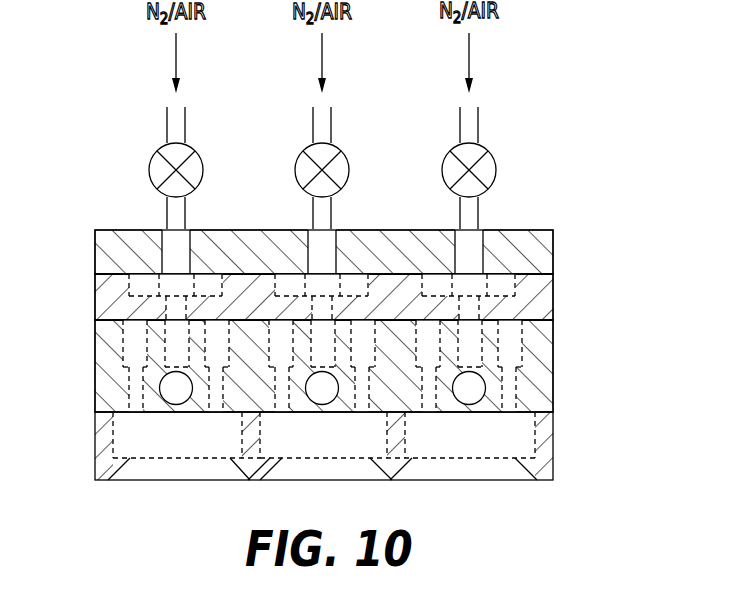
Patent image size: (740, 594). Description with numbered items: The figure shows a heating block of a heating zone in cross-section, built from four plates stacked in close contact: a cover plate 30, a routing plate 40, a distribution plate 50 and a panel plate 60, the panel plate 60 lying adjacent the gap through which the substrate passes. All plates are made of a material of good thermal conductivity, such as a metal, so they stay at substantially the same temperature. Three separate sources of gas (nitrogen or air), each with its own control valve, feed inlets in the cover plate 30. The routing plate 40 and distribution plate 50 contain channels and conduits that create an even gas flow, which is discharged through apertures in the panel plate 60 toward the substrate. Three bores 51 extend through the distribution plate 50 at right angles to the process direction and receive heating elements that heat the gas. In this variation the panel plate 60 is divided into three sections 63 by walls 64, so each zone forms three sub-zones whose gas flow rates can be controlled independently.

The cover plate 30 is at (530, 256).
The routing plate 40 is at (538, 298).
The distribution plate 50 is at (542, 380).
The bores 51 is at (177, 388).
The panel plate 60 is at (545, 450).
The sections 63 is at (172, 436).
The walls 64 is at (250, 432).